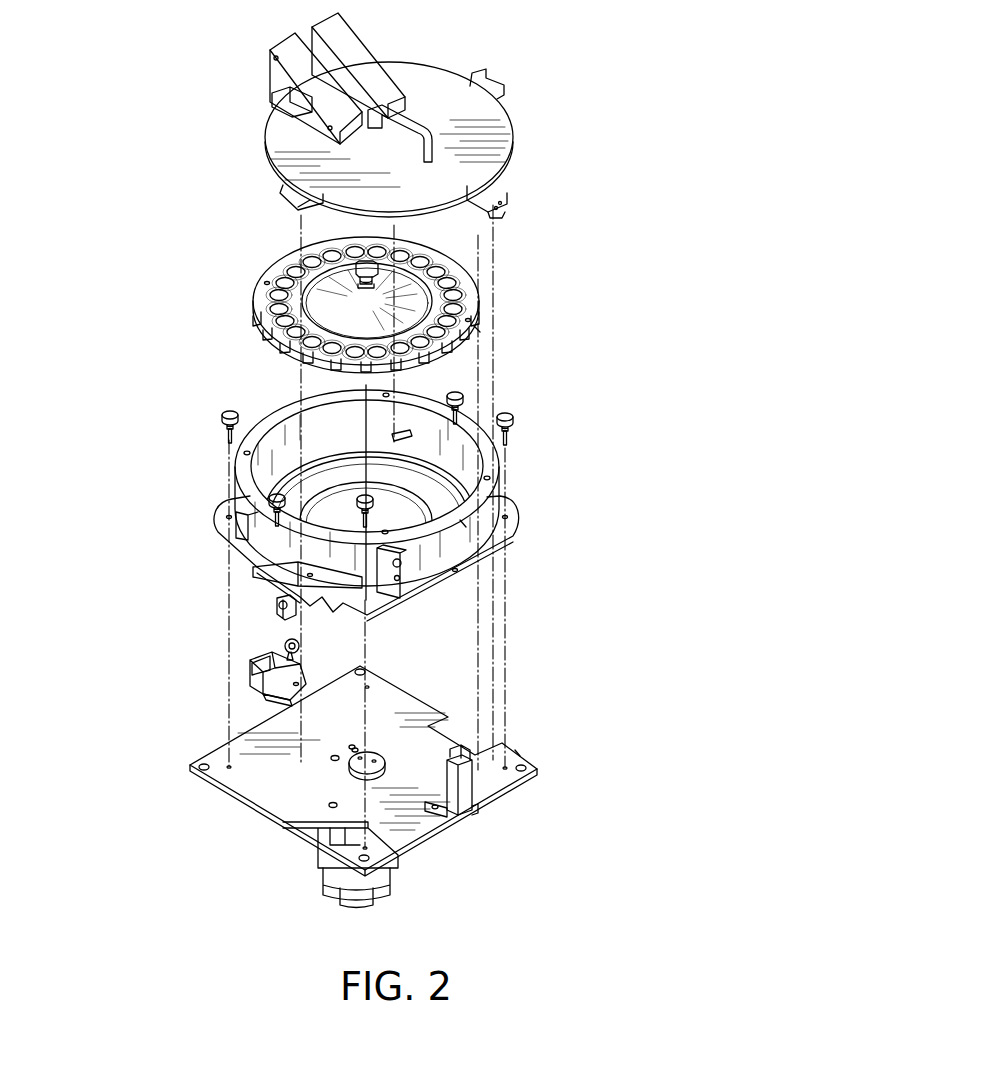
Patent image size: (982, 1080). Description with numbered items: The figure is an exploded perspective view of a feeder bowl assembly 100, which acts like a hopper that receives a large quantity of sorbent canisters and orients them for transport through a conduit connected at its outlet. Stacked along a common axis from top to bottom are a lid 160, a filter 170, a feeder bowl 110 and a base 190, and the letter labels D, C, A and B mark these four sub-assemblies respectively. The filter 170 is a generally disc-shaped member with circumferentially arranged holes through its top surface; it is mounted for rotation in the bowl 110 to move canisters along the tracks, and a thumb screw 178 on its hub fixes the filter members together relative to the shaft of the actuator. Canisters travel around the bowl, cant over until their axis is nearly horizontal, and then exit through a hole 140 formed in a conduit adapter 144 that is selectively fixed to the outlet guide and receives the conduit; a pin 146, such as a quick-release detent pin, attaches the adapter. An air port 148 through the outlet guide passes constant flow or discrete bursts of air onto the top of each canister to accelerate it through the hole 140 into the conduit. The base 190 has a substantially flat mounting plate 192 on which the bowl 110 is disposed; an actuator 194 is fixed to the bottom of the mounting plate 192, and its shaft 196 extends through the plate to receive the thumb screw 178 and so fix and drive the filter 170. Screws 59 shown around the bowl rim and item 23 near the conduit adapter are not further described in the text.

The feeder bowl assembly 100 is at (703, 167).
The feeder bowl 110 is at (468, 505).
The hole 140 is at (204, 692).
The conduit adapter 144 is at (267, 697).
The pin 146 is at (288, 647).
The air port 148 is at (283, 610).
The sensor 23 is at (262, 673).
The screws 59 is at (513, 418).
The lid 160 is at (456, 115).
The filter 170 is at (347, 305).
The thumb screw 178 is at (375, 267).
The base 190 is at (437, 805).
The mounting plate 192 is at (408, 828).
The actuator 194 is at (337, 893).
The shaft 196 is at (355, 758).
The housing sub-assembly A is at (463, 523).
The base plate sub-assembly B is at (517, 753).
The carousel sub-assembly C is at (477, 337).
The cover sub-assembly D is at (513, 160).